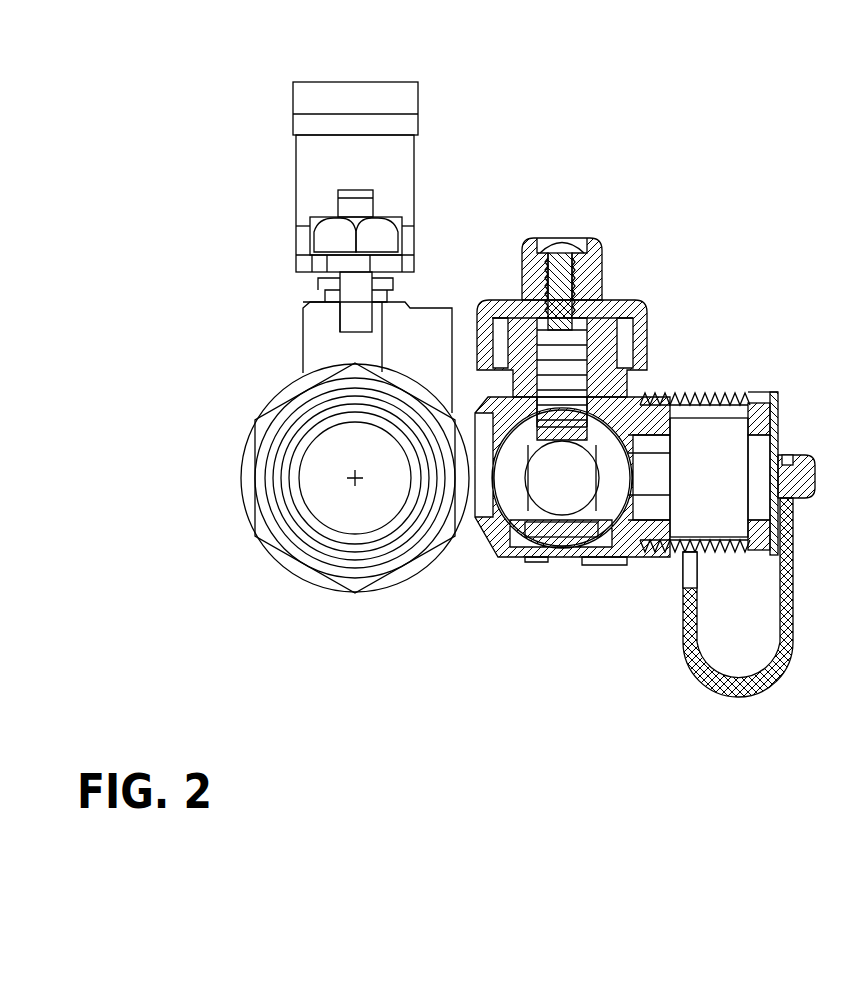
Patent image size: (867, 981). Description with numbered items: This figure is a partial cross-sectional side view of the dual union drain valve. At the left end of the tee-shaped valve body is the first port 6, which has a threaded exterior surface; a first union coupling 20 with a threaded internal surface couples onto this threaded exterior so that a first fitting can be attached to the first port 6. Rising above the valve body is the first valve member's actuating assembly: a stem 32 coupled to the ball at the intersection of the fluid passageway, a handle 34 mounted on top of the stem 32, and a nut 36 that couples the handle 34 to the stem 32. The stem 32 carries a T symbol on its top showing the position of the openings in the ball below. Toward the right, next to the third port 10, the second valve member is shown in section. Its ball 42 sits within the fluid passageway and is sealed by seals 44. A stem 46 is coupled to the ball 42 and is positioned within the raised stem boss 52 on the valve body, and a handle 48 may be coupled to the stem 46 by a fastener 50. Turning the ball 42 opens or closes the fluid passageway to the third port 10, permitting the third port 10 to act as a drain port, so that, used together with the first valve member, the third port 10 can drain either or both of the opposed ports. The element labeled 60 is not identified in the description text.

The first port 6 is at (278, 404).
The third port 10 is at (677, 552).
The first union coupling 20 is at (268, 540).
The stem 32 is at (360, 205).
The handle 34 is at (325, 93).
The nut 36 is at (382, 238).
The ball 42 is at (700, 395).
The seals 44 is at (527, 538).
The stem 46 is at (605, 313).
The handle 48 is at (592, 270).
The fastener 50 is at (553, 253).
The raised stem boss 52 is at (613, 458).
The tethered cap 60 is at (730, 393).